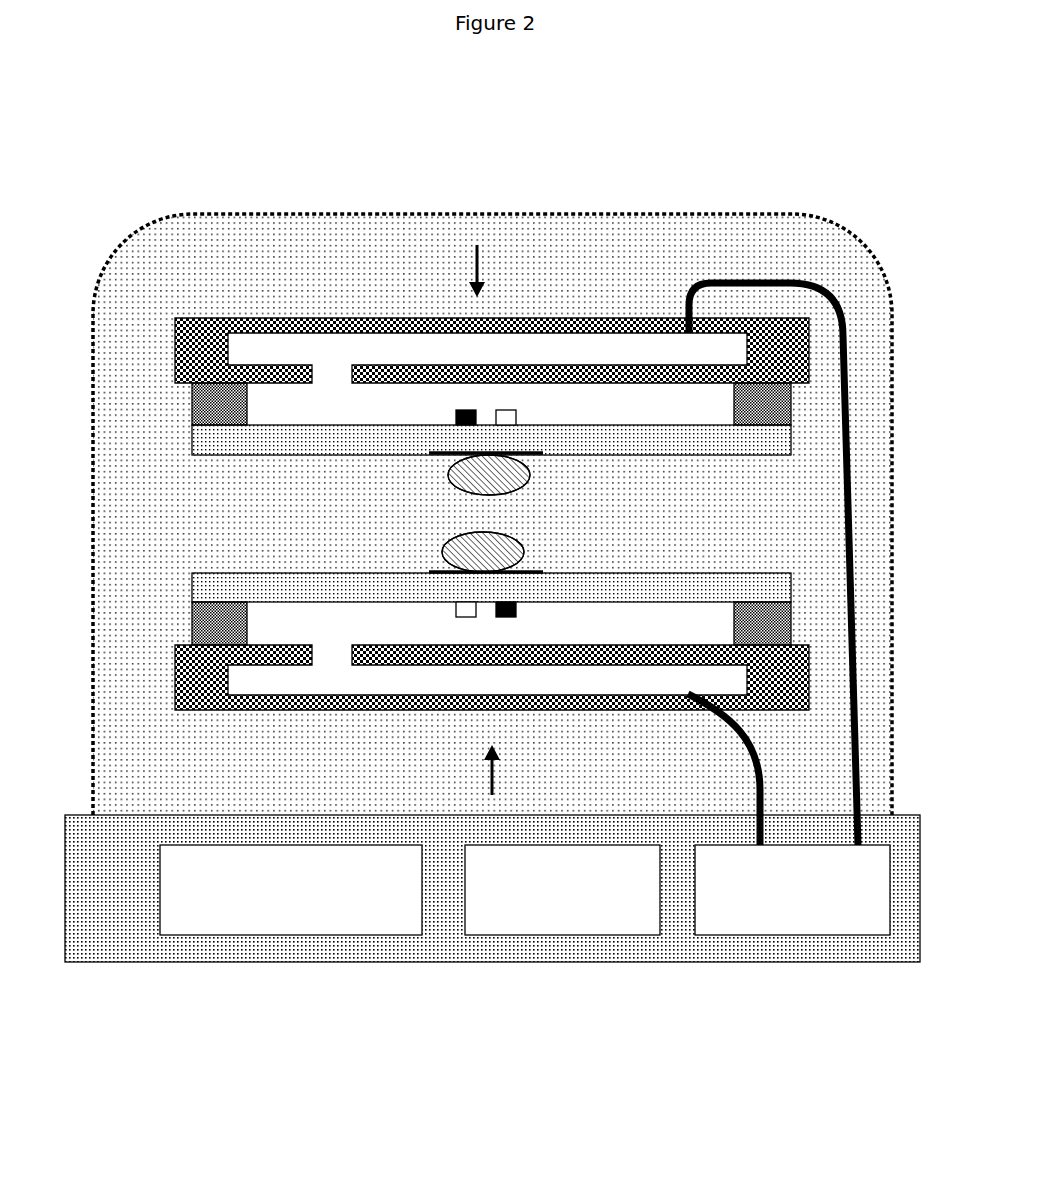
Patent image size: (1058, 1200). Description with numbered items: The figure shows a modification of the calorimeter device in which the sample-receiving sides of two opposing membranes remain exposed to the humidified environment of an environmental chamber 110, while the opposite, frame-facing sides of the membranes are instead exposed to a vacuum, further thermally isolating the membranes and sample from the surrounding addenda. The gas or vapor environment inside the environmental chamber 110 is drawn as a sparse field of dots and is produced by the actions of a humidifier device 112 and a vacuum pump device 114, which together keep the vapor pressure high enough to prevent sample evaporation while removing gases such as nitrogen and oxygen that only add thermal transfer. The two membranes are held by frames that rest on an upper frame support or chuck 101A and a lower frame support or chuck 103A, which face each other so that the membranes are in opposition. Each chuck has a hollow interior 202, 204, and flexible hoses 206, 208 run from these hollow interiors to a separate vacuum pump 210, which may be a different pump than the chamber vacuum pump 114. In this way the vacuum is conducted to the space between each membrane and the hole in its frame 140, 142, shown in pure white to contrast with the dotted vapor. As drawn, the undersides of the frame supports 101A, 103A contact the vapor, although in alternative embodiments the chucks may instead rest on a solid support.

The environmental chamber 110 is at (900, 315).
The humidifier device 112 is at (275, 937).
The vacuum pump device 114 is at (572, 922).
The vacuum pump 210 is at (790, 922).
The frame support or chuck 101A is at (483, 312).
The frame support or chuck 103A is at (464, 667).
The hollow interior 202 is at (381, 348).
The hollow interior 204 is at (542, 680).
The hole in the frame 140 is at (325, 413).
The hole in the frame 142 is at (332, 630).
The flexible hose 206 is at (834, 460).
The flexible hose 208 is at (767, 777).